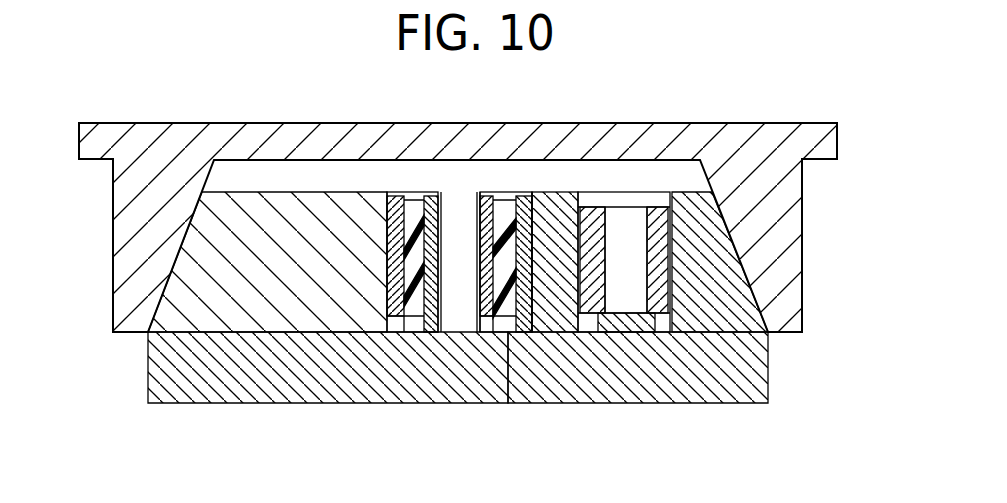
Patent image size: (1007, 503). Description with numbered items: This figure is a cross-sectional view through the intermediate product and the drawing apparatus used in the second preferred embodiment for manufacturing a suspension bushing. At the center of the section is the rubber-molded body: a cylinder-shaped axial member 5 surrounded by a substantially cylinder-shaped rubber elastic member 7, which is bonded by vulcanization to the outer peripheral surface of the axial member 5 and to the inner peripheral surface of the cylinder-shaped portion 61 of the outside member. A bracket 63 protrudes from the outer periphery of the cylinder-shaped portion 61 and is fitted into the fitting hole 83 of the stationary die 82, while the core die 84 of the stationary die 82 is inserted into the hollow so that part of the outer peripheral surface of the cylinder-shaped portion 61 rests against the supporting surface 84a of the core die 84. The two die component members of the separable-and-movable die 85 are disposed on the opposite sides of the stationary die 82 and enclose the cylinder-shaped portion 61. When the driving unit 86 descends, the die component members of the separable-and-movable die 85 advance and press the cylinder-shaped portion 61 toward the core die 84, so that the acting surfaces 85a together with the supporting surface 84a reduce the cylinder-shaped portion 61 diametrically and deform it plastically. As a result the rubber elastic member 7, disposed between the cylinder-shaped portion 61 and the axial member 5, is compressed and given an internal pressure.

The axial member 5 is at (437, 195).
The rubber elastic member 7 is at (513, 212).
The cylinder-shaped portion 61 is at (527, 335).
The bracket 63 is at (627, 193).
The stationary die 82 is at (708, 257).
The fitting hole 83 is at (665, 207).
The core die 84 is at (565, 220).
The supporting surface 84a is at (543, 213).
The separable-and-movable die 85 is at (290, 220).
The acting surfaces 85a is at (396, 197).
The driving unit 86 is at (745, 122).